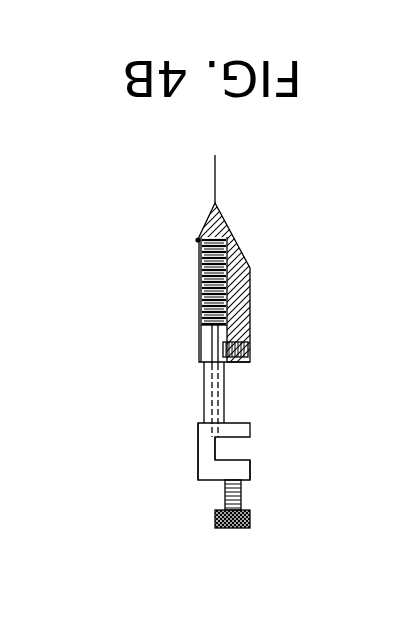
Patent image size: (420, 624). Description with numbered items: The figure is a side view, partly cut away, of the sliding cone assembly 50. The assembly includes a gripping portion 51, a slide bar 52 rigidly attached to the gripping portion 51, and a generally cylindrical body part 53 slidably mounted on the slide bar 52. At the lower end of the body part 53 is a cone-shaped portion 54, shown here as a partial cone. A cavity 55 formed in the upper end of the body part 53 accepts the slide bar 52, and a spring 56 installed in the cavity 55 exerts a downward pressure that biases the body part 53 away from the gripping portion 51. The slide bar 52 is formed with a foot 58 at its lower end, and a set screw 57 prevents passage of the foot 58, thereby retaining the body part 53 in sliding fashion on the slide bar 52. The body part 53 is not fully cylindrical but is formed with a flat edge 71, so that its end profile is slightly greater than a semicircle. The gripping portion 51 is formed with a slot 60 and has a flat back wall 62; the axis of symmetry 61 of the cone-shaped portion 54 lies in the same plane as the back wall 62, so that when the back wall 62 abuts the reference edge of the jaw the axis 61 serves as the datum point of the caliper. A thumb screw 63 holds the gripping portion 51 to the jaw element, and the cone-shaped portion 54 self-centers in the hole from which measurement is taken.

The sliding cone assembly 50 is at (312, 501).
The gripping portion 51 is at (135, 476).
The slide bar 52 is at (145, 379).
The body part 53 is at (152, 273).
The cone-shaped portion 54 is at (219, 262).
The cavity 55 is at (242, 367).
The spring 56 is at (148, 214).
The set screw 57 is at (280, 327).
The foot 58 is at (150, 291).
The slot 60 is at (234, 447).
The axis of symmetry 61 is at (148, 387).
The flat back wall 62 is at (160, 434).
The thumb screw 63 is at (203, 528).
The flat edge 71 is at (150, 315).